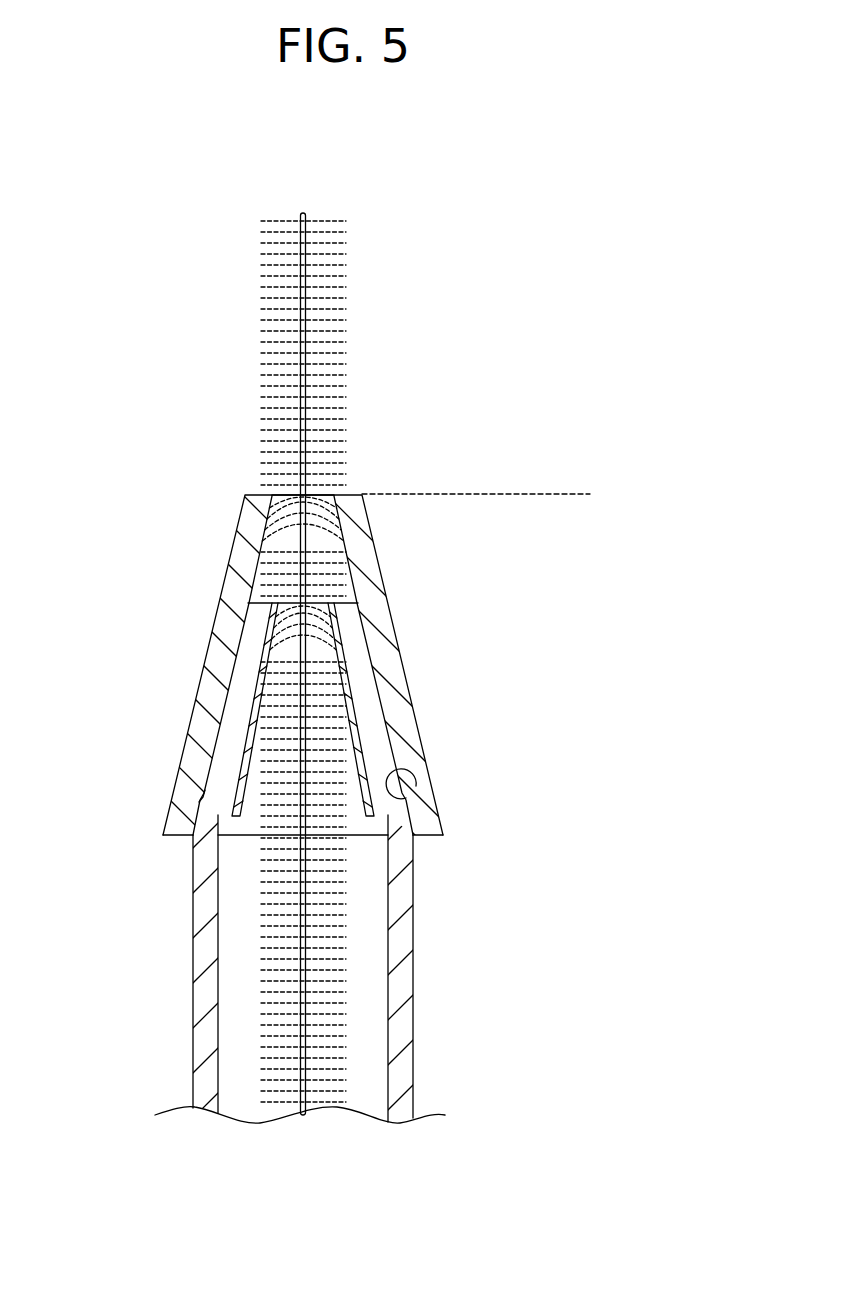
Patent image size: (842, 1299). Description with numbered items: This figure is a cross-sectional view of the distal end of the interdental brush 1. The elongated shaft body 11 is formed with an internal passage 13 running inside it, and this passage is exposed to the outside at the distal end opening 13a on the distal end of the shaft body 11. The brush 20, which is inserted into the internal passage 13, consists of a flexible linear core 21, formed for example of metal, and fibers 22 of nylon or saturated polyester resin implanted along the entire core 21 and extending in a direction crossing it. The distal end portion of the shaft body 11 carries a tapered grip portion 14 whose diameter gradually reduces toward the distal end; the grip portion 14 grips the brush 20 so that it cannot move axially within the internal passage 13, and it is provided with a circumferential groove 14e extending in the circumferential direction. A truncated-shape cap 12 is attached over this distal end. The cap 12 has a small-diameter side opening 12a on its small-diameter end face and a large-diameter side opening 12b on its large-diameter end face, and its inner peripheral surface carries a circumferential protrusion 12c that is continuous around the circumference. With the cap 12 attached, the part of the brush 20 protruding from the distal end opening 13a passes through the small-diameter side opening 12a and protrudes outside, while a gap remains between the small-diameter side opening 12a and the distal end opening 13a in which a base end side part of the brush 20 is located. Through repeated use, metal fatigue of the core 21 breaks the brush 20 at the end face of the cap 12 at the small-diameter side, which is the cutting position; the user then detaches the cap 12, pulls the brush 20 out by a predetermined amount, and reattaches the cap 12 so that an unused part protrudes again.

The interdental brush 1 is at (470, 297).
The shaft body 11 is at (414, 1025).
The cap 12 is at (408, 673).
The small-diameter side opening 12a is at (319, 480).
The large-diameter side opening 12b is at (180, 850).
The circumferential protrusion 12c is at (425, 758).
The internal passage 13 is at (240, 1010).
The distal end opening 13a is at (322, 590).
The grip portion 14 is at (235, 680).
The circumferential groove 14e is at (203, 800).
The brush 20 is at (115, 277).
The core 21 is at (302, 297).
The fibers 22 is at (260, 428).